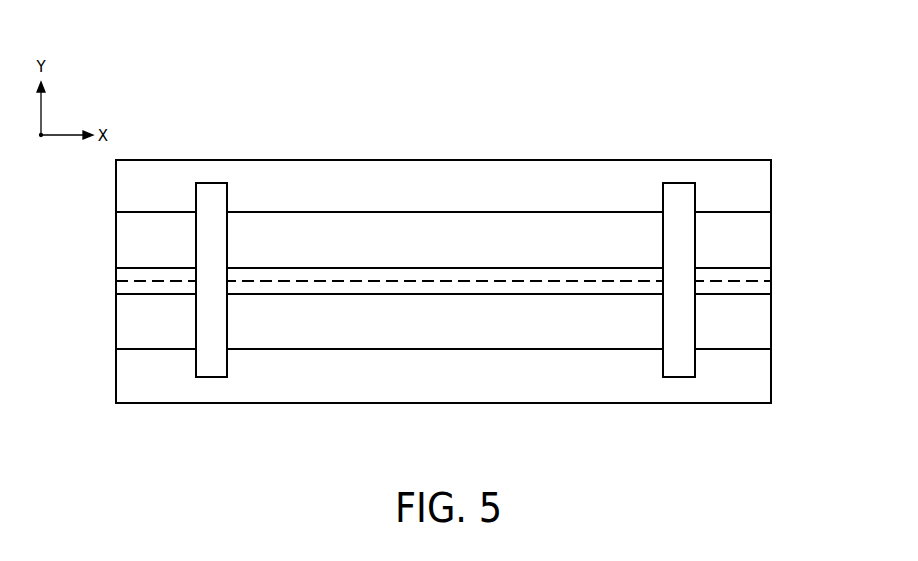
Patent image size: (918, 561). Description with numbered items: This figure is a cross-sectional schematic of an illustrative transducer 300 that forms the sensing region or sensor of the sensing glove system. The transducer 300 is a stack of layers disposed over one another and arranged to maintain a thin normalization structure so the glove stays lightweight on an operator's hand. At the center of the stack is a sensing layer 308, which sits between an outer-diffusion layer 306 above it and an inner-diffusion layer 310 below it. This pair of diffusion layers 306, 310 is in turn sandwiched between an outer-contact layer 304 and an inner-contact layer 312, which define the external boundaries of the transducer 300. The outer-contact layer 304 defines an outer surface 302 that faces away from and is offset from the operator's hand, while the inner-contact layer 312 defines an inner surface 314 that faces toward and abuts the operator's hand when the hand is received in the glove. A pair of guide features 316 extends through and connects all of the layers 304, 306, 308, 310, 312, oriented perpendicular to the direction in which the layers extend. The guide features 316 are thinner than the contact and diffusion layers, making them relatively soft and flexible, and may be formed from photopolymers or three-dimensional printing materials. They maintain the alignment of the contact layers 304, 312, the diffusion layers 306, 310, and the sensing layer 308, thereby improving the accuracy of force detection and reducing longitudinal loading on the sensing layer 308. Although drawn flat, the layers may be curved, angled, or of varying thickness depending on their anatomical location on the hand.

The transducer 300 is at (443, 204).
The outer surface 302 is at (320, 158).
The outer-contact layer 304 is at (762, 182).
The outer-diffusion layer 306 is at (762, 240).
The sensing layer 308 is at (762, 274).
The inner-diffusion layer 310 is at (762, 322).
The inner-contact layer 312 is at (762, 377).
The inner surface 314 is at (320, 404).
The guide features 316 is at (210, 190).